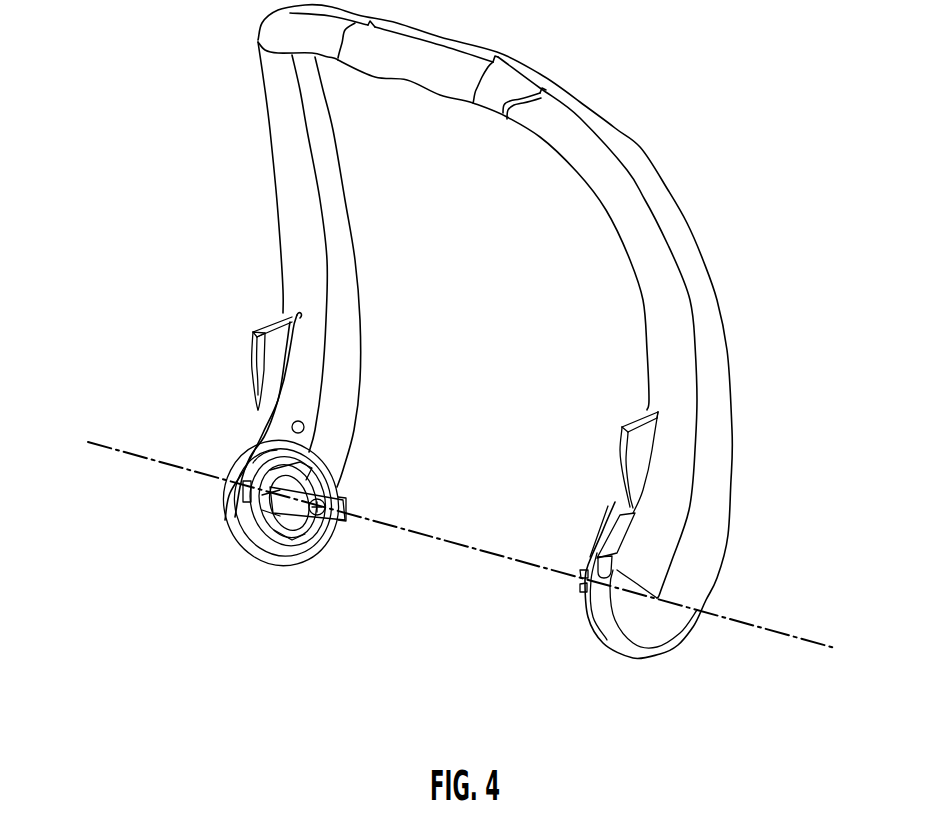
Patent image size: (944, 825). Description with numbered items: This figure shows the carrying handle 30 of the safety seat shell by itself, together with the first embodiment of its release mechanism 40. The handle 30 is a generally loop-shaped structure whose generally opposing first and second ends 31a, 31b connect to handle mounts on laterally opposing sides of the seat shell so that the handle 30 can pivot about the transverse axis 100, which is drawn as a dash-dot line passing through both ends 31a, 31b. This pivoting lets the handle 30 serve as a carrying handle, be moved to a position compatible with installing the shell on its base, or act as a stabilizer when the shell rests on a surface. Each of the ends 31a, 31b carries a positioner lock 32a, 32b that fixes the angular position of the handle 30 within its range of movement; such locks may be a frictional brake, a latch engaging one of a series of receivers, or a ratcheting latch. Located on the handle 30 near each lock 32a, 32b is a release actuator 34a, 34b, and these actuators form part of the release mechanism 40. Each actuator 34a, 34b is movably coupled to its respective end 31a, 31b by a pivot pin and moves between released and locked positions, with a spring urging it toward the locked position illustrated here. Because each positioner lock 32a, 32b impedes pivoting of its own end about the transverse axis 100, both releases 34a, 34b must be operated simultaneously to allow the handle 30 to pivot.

The handle 30 is at (617, 98).
The release mechanism 40 is at (106, 351).
The release actuator 34a is at (254, 351).
The release actuator 34b is at (617, 449).
The first end of the handle 31a is at (220, 550).
The second end of the handle 31b is at (665, 668).
The positioner lock 32a is at (354, 488).
The positioner lock 32b is at (560, 585).
The transverse axis 100 is at (792, 634).